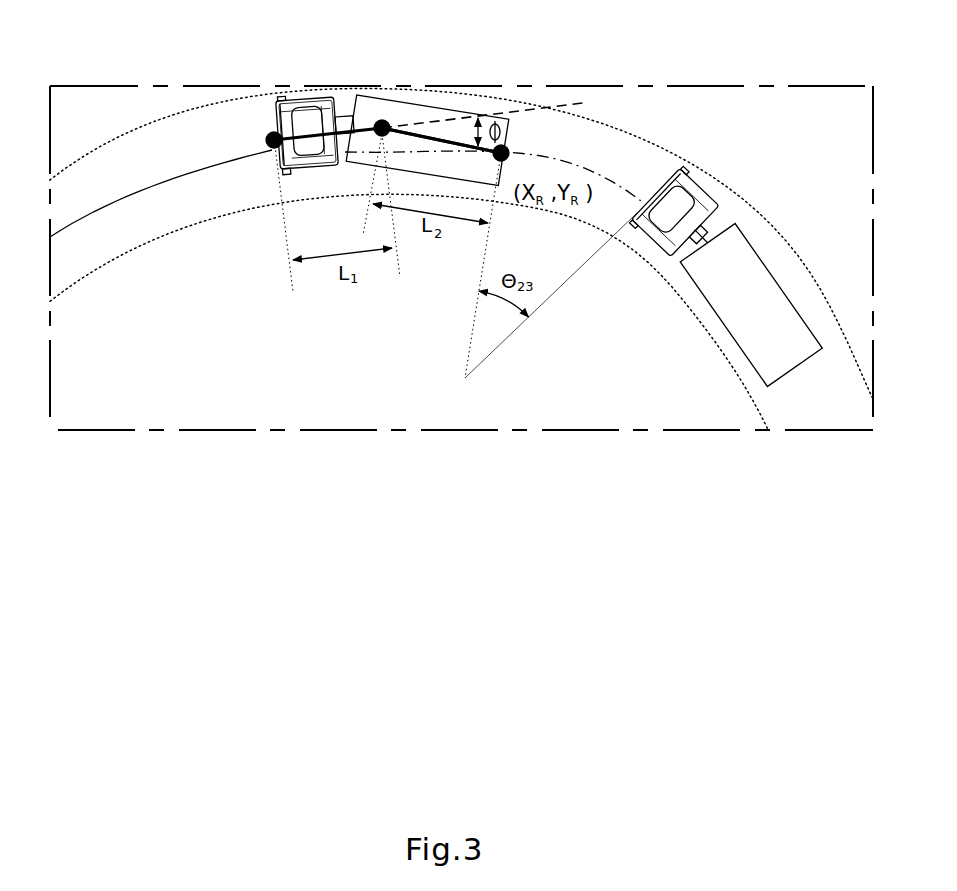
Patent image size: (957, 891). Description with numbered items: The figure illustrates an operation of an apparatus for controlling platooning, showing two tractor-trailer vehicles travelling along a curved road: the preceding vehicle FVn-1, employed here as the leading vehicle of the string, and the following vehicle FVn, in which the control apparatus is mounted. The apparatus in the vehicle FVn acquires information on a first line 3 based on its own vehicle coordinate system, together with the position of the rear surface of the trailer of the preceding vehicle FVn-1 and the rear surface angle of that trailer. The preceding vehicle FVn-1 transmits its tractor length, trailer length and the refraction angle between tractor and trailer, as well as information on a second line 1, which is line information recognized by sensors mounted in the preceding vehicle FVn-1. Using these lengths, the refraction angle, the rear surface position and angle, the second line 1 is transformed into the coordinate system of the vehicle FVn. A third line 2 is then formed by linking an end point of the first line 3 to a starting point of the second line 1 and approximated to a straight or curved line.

The second line 1 is at (161, 193).
The third line 2 is at (441, 152).
The first line 3 is at (493, 174).
The preceding vehicle FVn-1 is at (436, 107).
The vehicle FVn is at (725, 276).